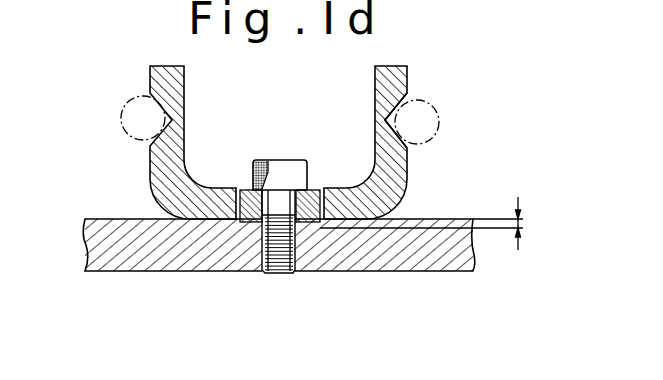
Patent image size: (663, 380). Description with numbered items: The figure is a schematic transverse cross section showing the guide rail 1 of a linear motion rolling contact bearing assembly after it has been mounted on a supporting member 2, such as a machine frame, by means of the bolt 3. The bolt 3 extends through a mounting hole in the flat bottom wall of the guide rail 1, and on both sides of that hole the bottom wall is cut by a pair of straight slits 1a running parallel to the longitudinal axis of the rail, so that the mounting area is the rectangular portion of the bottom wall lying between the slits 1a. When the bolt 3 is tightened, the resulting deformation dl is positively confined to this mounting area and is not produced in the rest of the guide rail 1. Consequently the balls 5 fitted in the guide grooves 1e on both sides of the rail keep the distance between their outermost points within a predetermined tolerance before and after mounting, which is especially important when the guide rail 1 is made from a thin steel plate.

The guide rail 1 is at (178, 132).
The slits 1a is at (234, 221).
The guide grooves 1e is at (395, 110).
The supporting member 2 is at (418, 246).
The bolt 3 is at (272, 255).
The balls 5 is at (415, 132).
The deformation dl is at (516, 216).